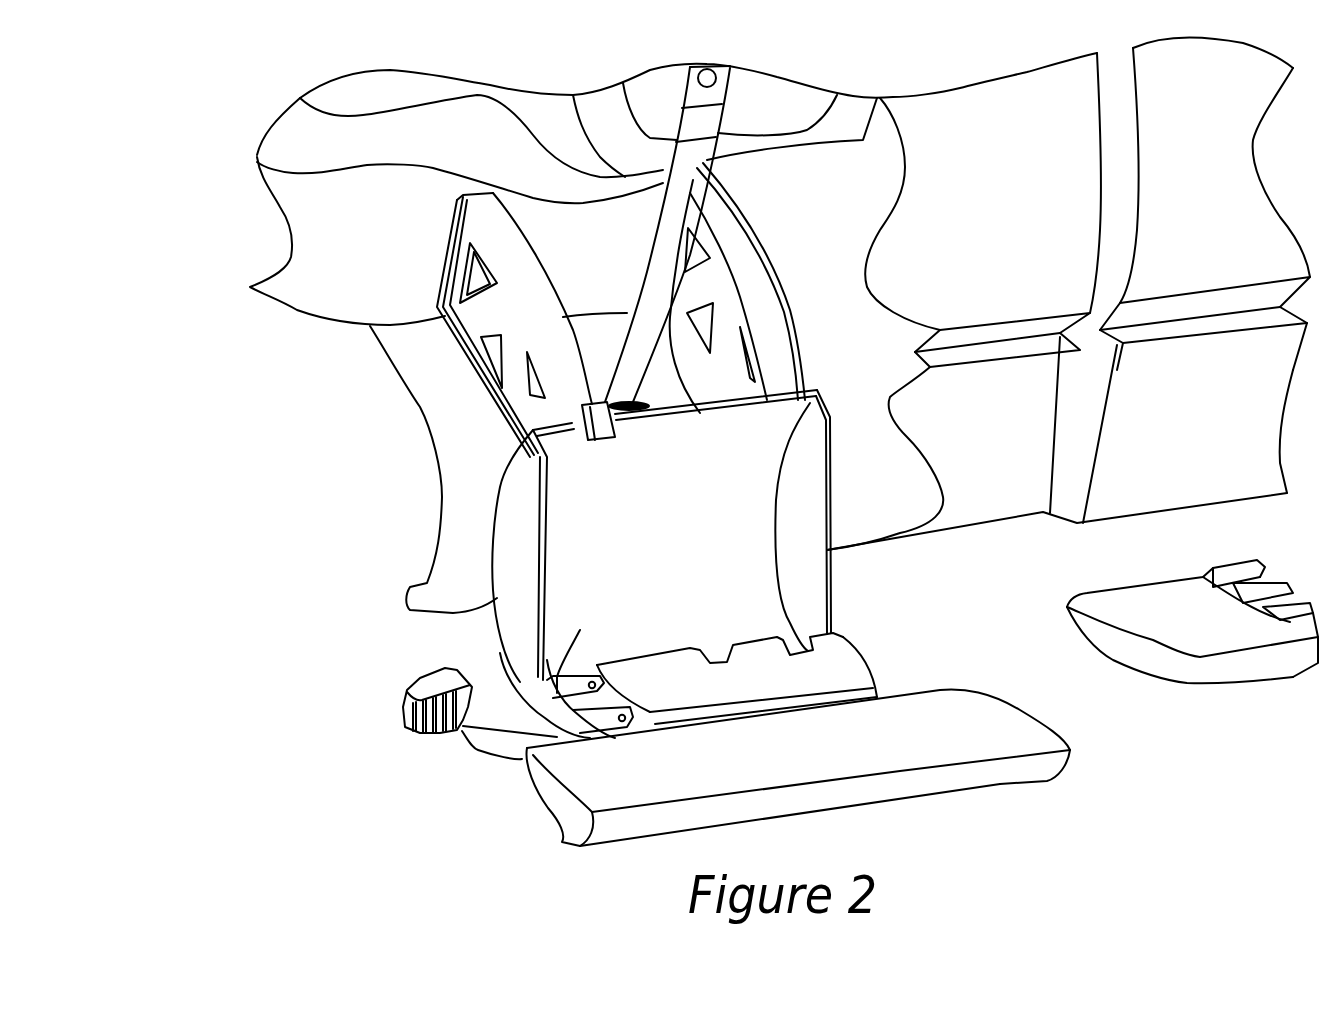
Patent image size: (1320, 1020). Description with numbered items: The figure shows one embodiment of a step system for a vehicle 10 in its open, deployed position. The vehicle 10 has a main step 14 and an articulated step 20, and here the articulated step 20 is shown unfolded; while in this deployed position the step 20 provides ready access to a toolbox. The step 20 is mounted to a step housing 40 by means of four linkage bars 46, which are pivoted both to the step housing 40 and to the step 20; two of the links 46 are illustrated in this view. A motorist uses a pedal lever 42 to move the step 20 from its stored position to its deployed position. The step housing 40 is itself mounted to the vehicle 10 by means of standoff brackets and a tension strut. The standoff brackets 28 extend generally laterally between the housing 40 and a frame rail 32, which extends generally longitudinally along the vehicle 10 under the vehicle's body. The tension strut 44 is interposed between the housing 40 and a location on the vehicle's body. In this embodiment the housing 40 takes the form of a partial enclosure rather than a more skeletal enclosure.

The vehicle 10 is at (198, 228).
The main step 14 is at (1287, 660).
The articulated step 20 is at (983, 770).
The standoff brackets 28 is at (457, 267).
The frame rail 32 is at (282, 143).
The step housing 40 is at (453, 613).
The pedal lever 42 is at (440, 733).
The tension strut 44 is at (647, 287).
The linkage bars 46 is at (560, 690).